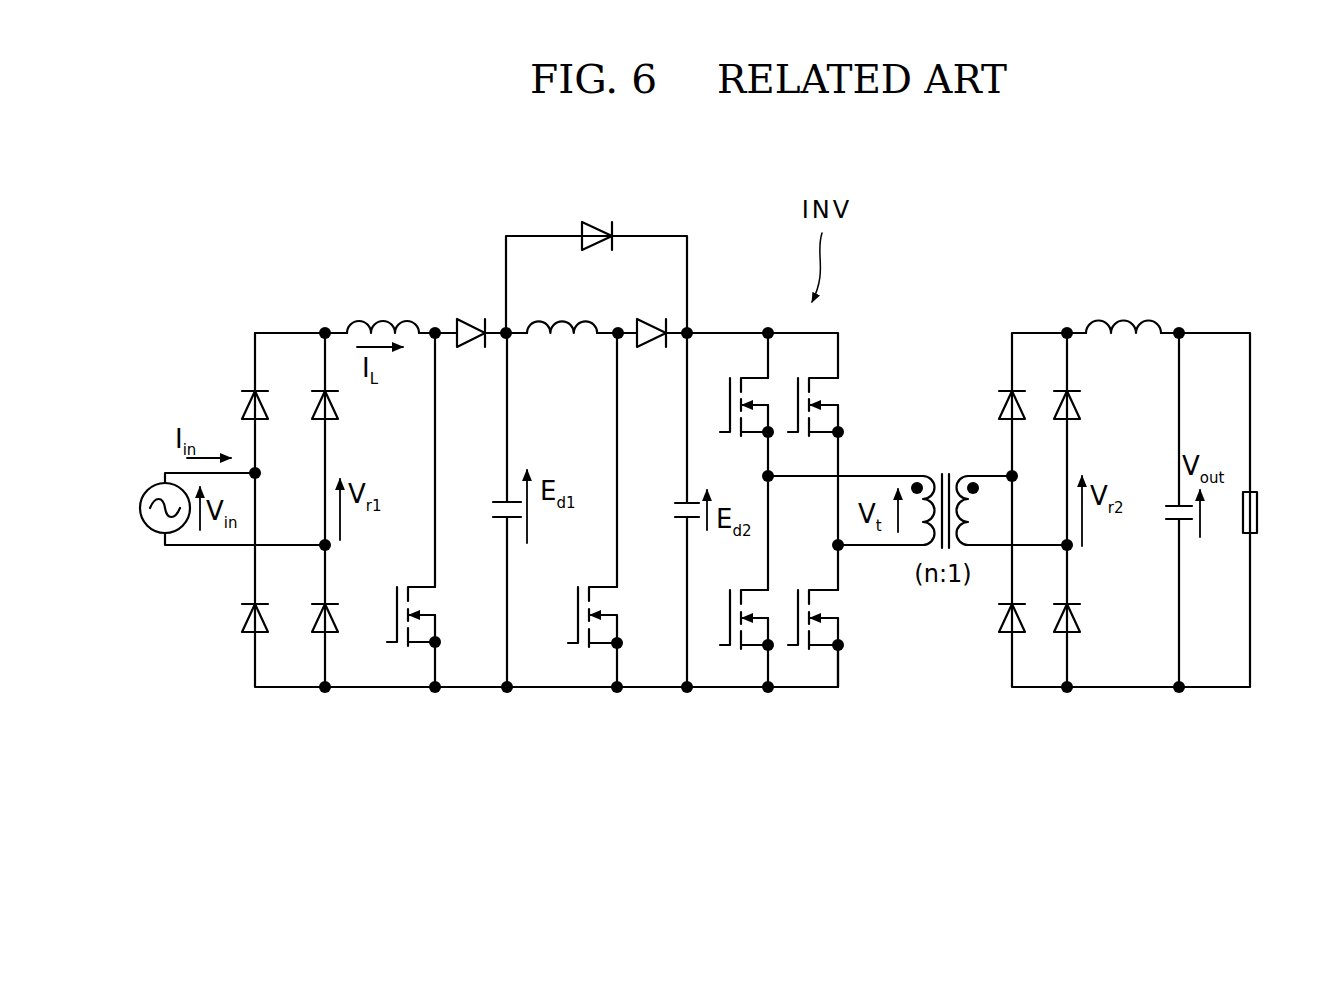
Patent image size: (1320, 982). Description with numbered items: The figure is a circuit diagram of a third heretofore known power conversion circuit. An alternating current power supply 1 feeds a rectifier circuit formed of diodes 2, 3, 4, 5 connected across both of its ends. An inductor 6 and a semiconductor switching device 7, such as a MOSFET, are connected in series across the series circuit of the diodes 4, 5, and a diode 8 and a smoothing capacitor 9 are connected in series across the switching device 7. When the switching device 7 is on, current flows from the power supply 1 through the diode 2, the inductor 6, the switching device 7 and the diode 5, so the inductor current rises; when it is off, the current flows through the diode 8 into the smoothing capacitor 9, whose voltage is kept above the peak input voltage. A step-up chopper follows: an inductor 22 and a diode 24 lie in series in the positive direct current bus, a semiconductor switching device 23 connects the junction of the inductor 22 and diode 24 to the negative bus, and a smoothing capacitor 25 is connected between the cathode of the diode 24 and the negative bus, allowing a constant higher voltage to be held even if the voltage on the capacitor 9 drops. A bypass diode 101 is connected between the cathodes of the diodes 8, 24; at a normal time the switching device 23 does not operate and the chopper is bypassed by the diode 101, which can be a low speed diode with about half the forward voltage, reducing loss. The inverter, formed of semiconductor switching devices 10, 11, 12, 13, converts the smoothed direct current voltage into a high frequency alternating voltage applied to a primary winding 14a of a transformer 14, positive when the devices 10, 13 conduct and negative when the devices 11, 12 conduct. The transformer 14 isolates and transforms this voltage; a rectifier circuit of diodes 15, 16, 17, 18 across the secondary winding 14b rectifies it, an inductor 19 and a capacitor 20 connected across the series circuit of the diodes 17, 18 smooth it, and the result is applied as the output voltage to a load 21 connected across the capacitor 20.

The alternating current power supply 1 is at (160, 488).
The diode 2 is at (247, 381).
The diode 3 is at (244, 592).
The diode 4 is at (316, 380).
The diode 5 is at (318, 592).
The inductor 6 is at (378, 312).
The semiconductor switching device 7 is at (422, 578).
The diode 8 is at (470, 316).
The smoothing capacitor 9 is at (497, 494).
The semiconductor switching device 10 is at (722, 398).
The semiconductor switching device 11 is at (722, 602).
The semiconductor switching device 12 is at (793, 398).
The semiconductor switching device 13 is at (800, 580).
The transformer 14 is at (948, 470).
The primary winding 14a is at (922, 472).
The secondary winding 14b is at (960, 472).
The diode 15 is at (1000, 382).
The diode 16 is at (998, 630).
The diode 17 is at (1078, 402).
The diode 18 is at (1085, 612).
The inductor 19 is at (1118, 320).
The capacitor 20 is at (1168, 502).
The load 21 is at (1258, 502).
The inductor 22 is at (558, 318).
The semiconductor switching device 23 is at (565, 616).
The diode 24 is at (658, 318).
The smoothing capacitor 25 is at (678, 494).
The bypass diode 101 is at (602, 222).